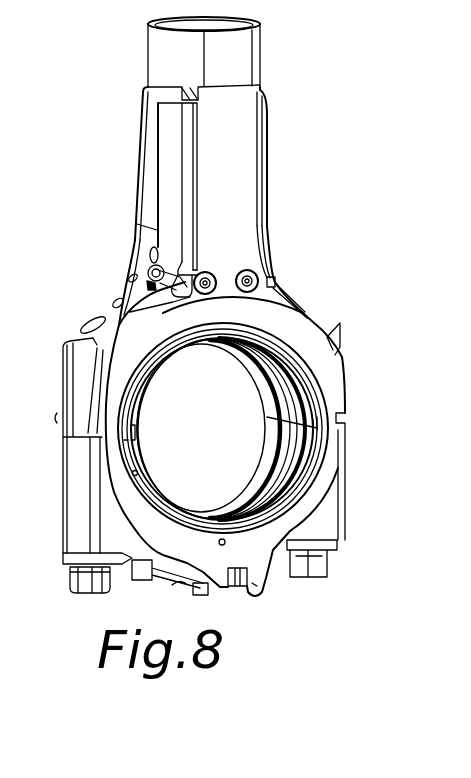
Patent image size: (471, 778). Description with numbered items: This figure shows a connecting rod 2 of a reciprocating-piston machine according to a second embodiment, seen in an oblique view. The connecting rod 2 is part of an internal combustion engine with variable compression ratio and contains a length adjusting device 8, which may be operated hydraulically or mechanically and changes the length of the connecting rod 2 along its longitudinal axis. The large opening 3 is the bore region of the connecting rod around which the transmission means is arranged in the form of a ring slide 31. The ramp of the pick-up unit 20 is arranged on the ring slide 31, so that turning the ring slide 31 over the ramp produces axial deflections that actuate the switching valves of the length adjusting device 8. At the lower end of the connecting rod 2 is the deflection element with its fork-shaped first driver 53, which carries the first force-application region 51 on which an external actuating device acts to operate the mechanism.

The connecting rod 2 is at (242, 357).
The length adjusting device 8 is at (234, 200).
The pick-up unit 20 is at (232, 271).
The wheel bearing bore 3 is at (155, 377).
The ring slide 31 is at (330, 433).
The first driver 53 is at (262, 585).
The first force-application region 51 is at (253, 602).